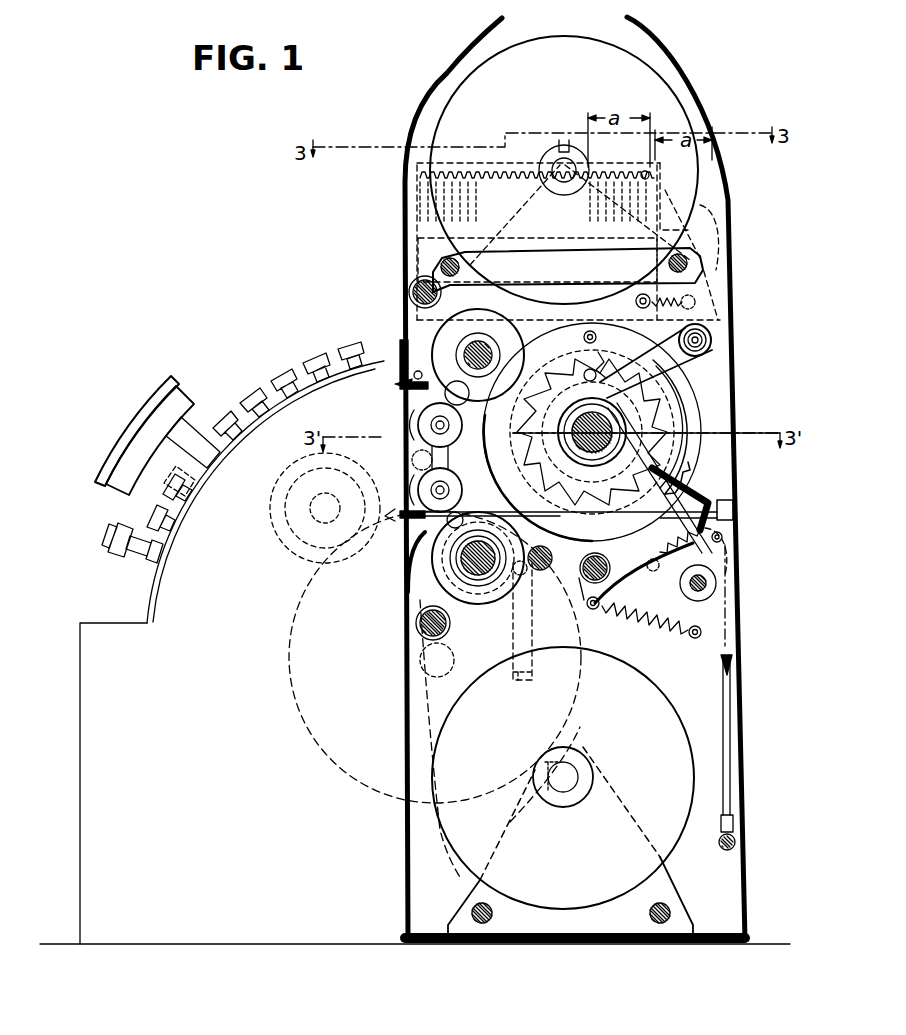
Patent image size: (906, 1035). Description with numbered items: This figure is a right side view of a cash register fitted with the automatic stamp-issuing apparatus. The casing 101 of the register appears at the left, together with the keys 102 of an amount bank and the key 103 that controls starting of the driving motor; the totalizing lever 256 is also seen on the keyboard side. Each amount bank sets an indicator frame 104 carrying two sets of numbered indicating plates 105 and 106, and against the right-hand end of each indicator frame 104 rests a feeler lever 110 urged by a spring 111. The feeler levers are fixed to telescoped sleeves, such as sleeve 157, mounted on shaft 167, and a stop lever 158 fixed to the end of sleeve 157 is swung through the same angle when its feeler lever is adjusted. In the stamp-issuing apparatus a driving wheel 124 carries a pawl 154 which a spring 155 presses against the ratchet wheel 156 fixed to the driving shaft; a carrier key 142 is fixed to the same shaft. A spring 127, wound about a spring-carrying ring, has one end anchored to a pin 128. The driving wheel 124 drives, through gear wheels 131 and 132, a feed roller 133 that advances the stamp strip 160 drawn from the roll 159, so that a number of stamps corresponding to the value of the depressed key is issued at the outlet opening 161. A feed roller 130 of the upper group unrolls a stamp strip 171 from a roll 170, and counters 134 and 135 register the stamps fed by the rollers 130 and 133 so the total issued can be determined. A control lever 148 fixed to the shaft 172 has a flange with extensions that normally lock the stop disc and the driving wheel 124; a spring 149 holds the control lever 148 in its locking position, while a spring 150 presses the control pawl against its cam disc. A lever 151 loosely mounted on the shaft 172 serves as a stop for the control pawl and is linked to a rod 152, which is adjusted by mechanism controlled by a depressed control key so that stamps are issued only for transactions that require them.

The casing 101 is at (80, 714).
The keys 102 is at (293, 380).
The key 103 is at (127, 436).
The totalizing lever 256 is at (108, 545).
The roll 170 is at (560, 42).
The indicating plates 105 is at (418, 180).
The indicator frame 104 is at (418, 212).
The indicating plates 106 is at (658, 173).
The feeler lever 110 is at (678, 262).
The spring 111 is at (636, 305).
The feed roller 130 is at (432, 343).
The stamp strip 171 is at (405, 392).
The counter 134 is at (418, 425).
The counter 135 is at (416, 487).
The shaft 167 is at (400, 516).
The carrier key 142 is at (560, 468).
The pawl 154 is at (572, 378).
The ratchet wheel 156 is at (545, 447).
The spring 155 is at (598, 350).
The sleeve 157 is at (706, 354).
The stop lever 158 is at (666, 440).
The driving wheel 124 is at (695, 463).
The control lever 148 is at (690, 500).
The spring 150 is at (660, 556).
The shaft 172 is at (600, 583).
The lever 151 is at (652, 606).
The spring 149 is at (655, 627).
The feed roller 133 is at (432, 578).
The stamp strip 160 is at (412, 548).
The outlet opening 161 is at (400, 560).
The gear wheel 132 is at (485, 605).
The gear wheel 131 is at (540, 595).
The rod 152 is at (512, 672).
The roll 159 is at (650, 680).
The spring 127 is at (720, 706).
The pin 128 is at (720, 848).